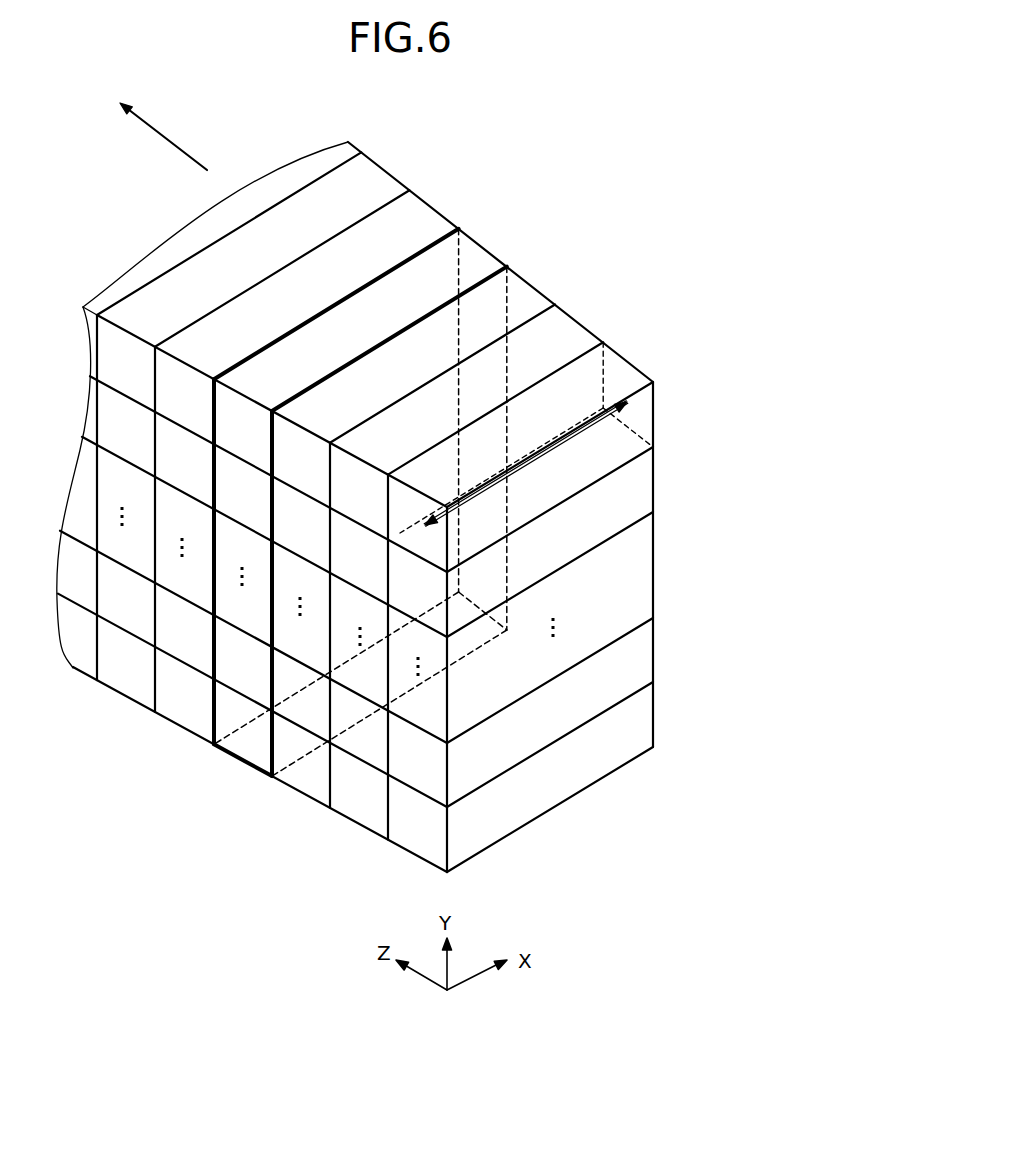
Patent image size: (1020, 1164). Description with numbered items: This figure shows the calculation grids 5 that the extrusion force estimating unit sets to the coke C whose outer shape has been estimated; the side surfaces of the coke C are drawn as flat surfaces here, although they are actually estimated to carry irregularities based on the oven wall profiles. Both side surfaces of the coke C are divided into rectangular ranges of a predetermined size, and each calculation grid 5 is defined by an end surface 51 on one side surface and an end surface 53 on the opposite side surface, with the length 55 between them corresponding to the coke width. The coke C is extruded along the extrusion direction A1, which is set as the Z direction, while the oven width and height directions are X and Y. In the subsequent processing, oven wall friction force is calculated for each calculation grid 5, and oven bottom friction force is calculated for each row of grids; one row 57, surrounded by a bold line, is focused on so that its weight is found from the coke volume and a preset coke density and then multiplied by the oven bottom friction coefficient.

The calculation grid 5 is at (583, 384).
The end surface 51 is at (427, 543).
The end surface 53 is at (640, 411).
The length 55 is at (553, 445).
The row 57 is at (214, 702).
The extrusion direction A1 is at (162, 134).
The coke C is at (547, 222).